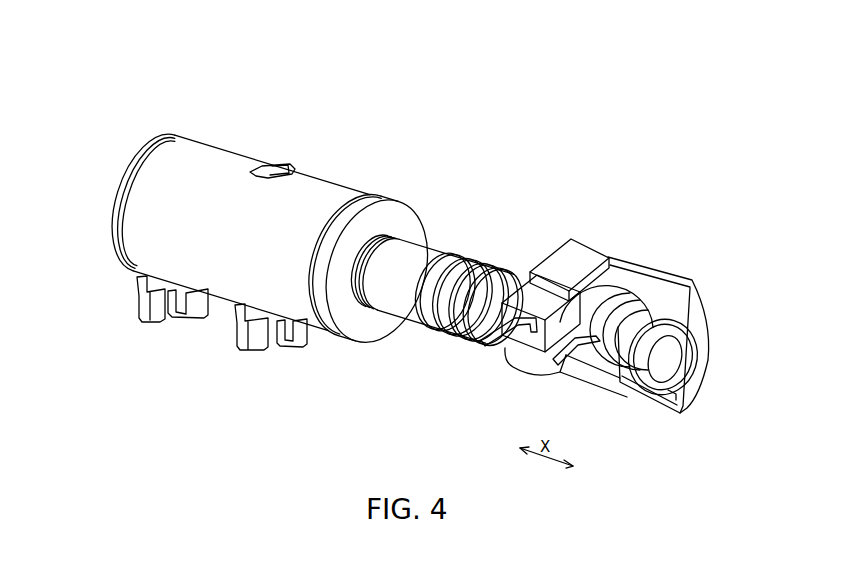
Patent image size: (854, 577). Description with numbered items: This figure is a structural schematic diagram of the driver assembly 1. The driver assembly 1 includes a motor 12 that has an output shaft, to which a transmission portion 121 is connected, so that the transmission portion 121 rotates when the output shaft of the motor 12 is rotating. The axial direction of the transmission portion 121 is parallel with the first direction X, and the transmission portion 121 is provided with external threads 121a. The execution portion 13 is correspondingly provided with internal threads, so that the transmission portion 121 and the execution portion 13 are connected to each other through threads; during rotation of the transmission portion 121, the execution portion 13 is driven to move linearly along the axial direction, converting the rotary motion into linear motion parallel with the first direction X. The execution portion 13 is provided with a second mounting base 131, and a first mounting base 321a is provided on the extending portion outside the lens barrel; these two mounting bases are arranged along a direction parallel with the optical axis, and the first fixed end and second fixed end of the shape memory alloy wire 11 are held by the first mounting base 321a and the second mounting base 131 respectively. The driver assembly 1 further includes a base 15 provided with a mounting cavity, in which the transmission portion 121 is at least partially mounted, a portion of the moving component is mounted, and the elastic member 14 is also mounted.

The driver assembly 1 is at (230, 88).
The motor 12 is at (300, 177).
The transmission portion 121 is at (422, 254).
The external threads 121a is at (467, 333).
The execution portion 13 is at (530, 291).
The second mounting base 131 is at (496, 349).
The shape memory alloy wire 11 is at (537, 356).
The base 15 is at (591, 253).
The elastic member 14 is at (614, 293).
The first mounting base 321a is at (568, 368).